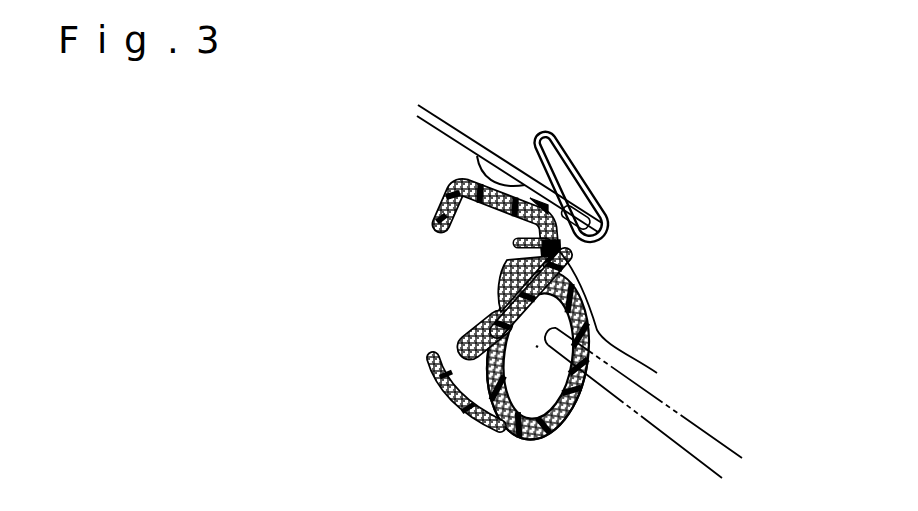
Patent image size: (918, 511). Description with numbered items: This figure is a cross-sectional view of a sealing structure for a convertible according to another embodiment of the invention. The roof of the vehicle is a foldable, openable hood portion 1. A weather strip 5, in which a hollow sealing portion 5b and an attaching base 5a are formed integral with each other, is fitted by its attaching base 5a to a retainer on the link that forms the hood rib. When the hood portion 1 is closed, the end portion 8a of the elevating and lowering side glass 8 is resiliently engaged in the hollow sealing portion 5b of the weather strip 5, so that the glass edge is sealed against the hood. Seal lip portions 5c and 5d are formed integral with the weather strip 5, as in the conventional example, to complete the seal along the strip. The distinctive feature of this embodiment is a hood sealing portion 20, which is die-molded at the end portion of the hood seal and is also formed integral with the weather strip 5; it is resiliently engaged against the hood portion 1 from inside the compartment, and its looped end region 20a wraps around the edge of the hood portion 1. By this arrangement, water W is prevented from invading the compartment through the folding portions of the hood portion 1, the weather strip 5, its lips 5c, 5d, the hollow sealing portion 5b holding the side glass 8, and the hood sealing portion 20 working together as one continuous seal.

The hood portion 1 is at (450, 125).
The hood sealing portion 20 is at (439, 169).
The clip loop portion 20a is at (600, 200).
The weather strip 5 is at (598, 343).
The attaching base 5a is at (492, 302).
The hollow sealing portion 5b is at (571, 413).
The seal lip portion 5c is at (450, 401).
The seal lip portion 5d is at (625, 325).
The side glass 8 is at (703, 431).
The end portion of side glass 8a is at (588, 378).
The water W is at (580, 249).